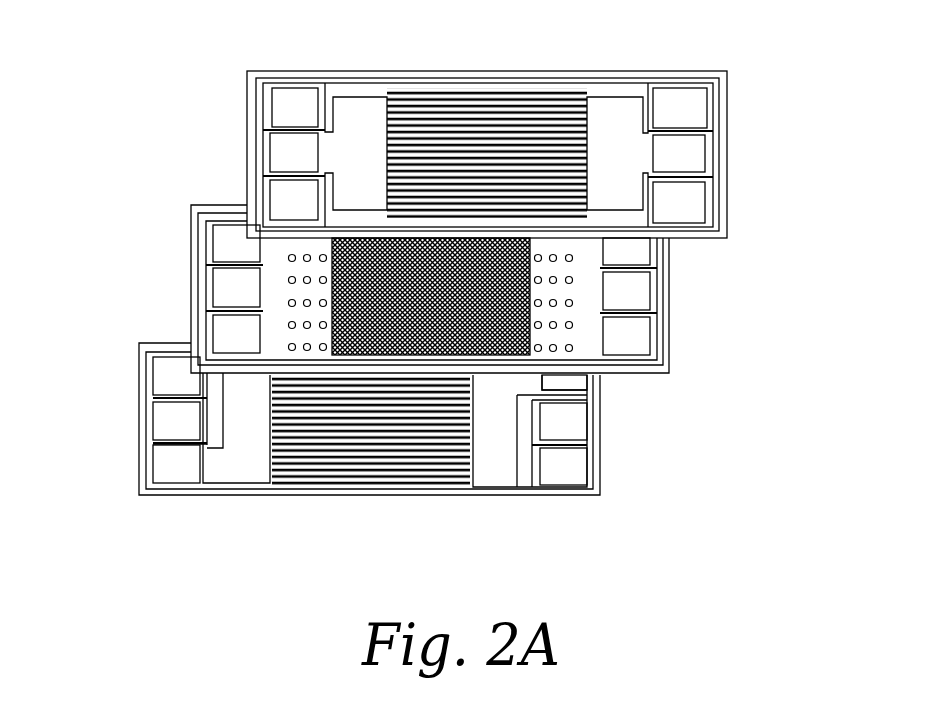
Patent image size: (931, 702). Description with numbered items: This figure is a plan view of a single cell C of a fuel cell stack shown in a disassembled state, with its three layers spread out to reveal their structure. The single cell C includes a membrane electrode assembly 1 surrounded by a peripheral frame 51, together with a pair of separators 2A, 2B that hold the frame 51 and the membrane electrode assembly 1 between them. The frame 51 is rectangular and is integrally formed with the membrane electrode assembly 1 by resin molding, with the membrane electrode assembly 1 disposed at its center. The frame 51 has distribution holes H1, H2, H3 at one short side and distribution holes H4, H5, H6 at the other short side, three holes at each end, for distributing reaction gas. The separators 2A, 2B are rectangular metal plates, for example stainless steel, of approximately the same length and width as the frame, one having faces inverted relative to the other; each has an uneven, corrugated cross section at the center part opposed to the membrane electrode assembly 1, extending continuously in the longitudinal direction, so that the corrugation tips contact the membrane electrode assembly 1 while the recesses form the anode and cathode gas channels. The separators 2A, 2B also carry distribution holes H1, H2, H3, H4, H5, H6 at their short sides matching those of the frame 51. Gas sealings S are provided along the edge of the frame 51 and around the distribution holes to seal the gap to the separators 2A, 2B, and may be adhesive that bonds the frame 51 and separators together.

The separator 2A is at (728, 74).
The separator 2B is at (137, 402).
The single cell C is at (693, 58).
The gas sealing S is at (340, 83).
The membrane electrode assembly 1 is at (530, 333).
The frame 51 is at (659, 380).
The distribution hole H1 is at (272, 107).
The distribution hole H2 is at (272, 145).
The distribution hole H3 is at (270, 190).
The distribution hole H4 is at (705, 108).
The distribution hole H5 is at (705, 150).
The distribution hole H6 is at (705, 197).